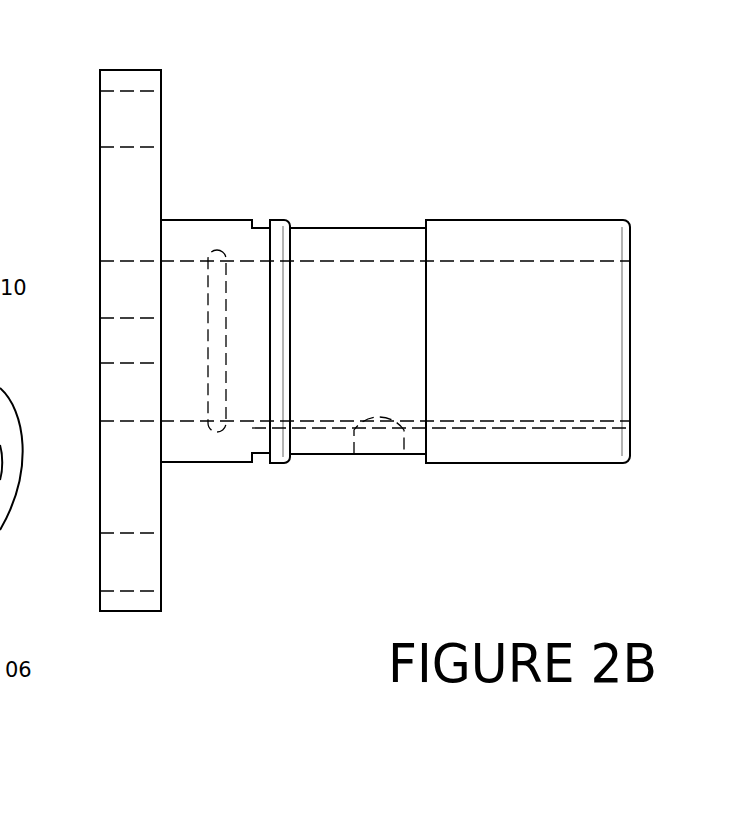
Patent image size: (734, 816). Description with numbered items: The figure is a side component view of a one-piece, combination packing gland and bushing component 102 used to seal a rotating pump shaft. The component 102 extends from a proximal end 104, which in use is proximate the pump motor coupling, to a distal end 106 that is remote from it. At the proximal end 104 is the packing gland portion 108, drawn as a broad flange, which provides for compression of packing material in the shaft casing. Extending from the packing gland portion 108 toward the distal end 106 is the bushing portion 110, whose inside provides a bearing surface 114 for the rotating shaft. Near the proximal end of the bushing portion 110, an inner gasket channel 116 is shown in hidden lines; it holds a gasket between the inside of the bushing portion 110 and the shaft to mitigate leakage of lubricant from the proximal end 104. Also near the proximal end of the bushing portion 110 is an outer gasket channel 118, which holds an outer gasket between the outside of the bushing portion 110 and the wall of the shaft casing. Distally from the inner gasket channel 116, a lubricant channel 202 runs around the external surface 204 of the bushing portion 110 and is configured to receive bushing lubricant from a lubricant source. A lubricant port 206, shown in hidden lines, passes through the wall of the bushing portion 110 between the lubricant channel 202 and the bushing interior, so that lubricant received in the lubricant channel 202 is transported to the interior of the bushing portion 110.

The packing gland and bushing component 102 is at (552, 103).
The proximal end 104 is at (97, 175).
The distal end 106 is at (634, 225).
The packing gland portion 108 is at (170, 193).
The bushing portion 110 is at (317, 155).
The bearing surface 114 is at (0, 495).
The inner gasket channel 116 is at (217, 432).
The outer gasket channel 118 is at (259, 464).
The lubricant channel 202 is at (344, 228).
The external surface 204 is at (460, 218).
The lubricant port 206 is at (382, 460).